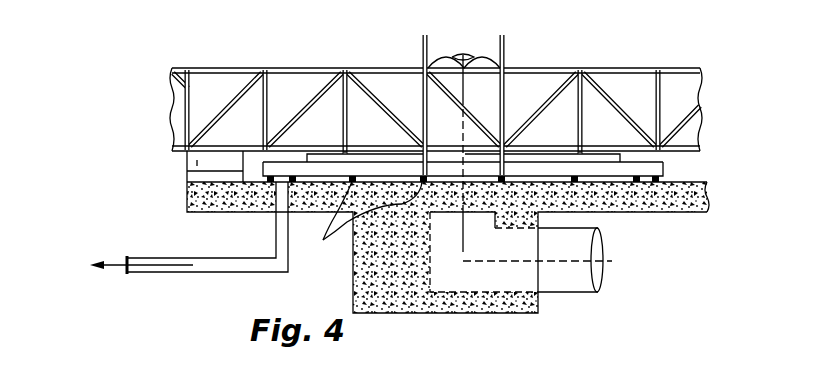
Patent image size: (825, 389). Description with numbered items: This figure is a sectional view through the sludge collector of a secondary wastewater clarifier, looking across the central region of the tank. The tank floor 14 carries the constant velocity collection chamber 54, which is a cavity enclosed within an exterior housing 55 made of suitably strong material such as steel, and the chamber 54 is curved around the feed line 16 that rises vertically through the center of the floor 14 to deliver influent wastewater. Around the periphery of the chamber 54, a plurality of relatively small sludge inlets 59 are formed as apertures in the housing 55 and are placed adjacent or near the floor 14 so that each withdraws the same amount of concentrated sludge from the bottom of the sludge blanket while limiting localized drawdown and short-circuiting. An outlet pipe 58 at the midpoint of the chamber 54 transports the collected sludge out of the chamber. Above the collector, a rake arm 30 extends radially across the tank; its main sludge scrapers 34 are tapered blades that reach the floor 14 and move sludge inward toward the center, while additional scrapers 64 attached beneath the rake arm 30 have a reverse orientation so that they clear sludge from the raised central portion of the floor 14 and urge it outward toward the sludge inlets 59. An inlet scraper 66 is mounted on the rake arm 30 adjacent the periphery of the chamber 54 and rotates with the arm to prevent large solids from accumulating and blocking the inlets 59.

The floor 14 is at (697, 182).
The feed line 16 is at (465, 54).
The rake arm 30 is at (288, 68).
The sludge scrapers 34 is at (195, 162).
The constant velocity collection chamber 54 is at (617, 170).
The exterior housing 55 is at (663, 165).
The outlet pipe 58 is at (198, 272).
The sludge inlets 59 is at (366, 222).
The scrapers 64 is at (367, 157).
The inlet scraper 66 is at (187, 173).